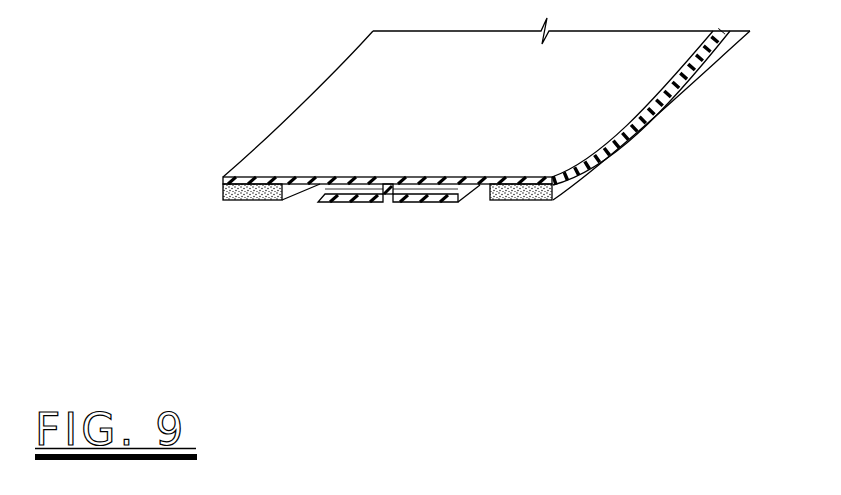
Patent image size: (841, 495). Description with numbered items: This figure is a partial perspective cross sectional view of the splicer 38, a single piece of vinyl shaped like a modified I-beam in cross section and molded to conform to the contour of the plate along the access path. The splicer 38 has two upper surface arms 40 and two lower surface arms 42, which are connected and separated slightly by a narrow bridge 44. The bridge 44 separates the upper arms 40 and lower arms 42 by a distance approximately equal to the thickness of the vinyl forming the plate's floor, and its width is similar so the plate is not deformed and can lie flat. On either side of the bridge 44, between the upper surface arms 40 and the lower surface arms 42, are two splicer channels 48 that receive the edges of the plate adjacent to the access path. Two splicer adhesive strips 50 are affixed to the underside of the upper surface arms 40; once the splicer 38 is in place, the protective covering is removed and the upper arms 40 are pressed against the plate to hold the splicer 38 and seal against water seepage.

The splicer 38 is at (270, 107).
The upper surface arms 40 is at (232, 181).
The lower surface arms 42 is at (358, 197).
The bridge 44 is at (380, 188).
The splicer channels 48 is at (357, 190).
The splicer adhesive strips 50 is at (262, 200).